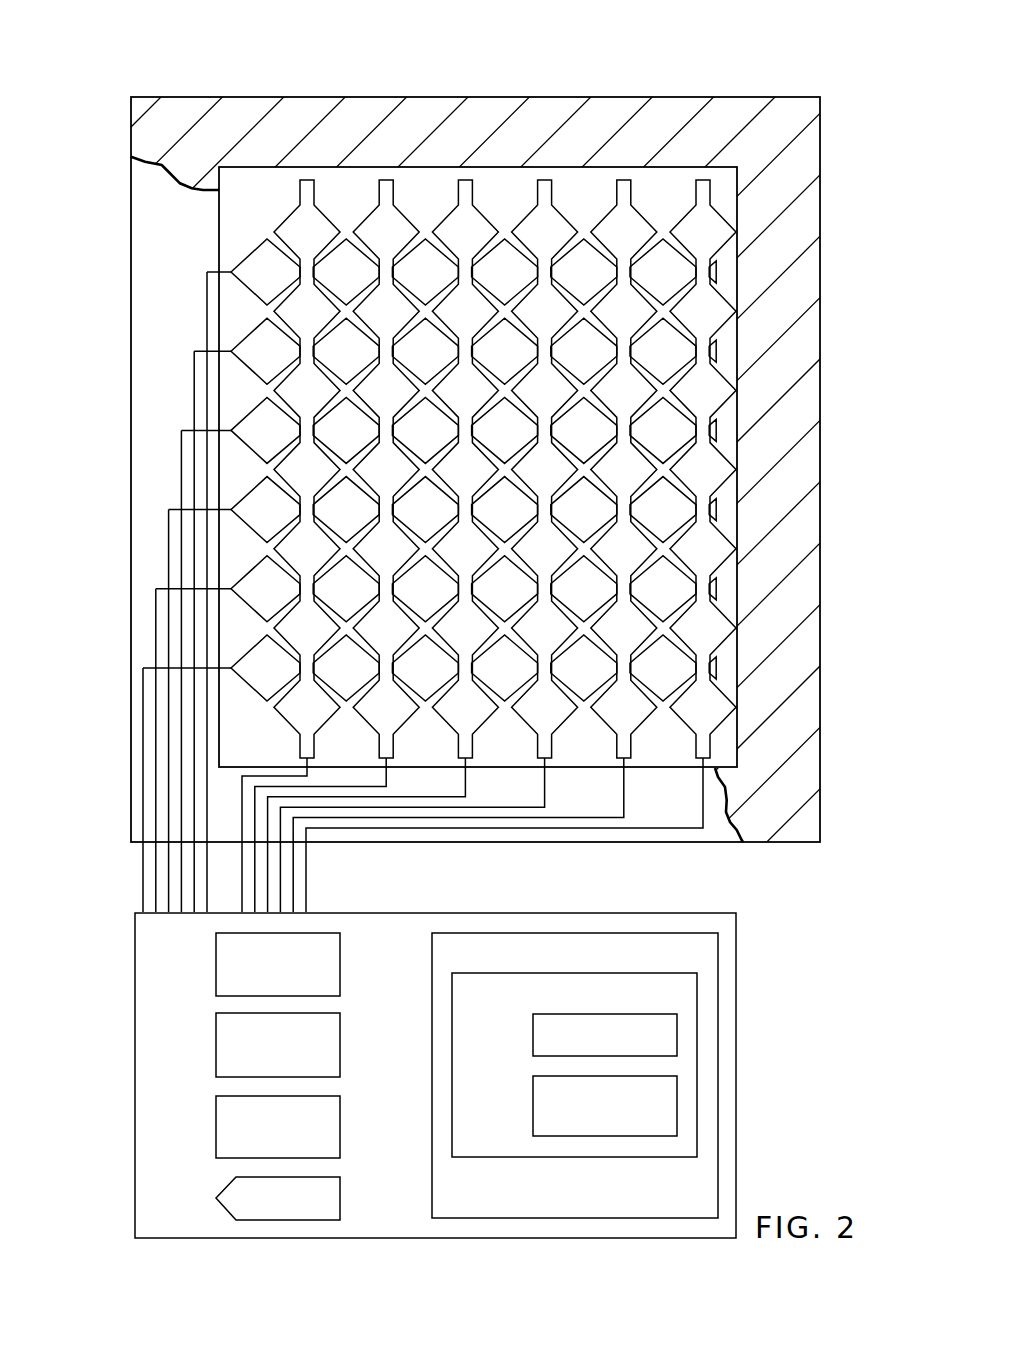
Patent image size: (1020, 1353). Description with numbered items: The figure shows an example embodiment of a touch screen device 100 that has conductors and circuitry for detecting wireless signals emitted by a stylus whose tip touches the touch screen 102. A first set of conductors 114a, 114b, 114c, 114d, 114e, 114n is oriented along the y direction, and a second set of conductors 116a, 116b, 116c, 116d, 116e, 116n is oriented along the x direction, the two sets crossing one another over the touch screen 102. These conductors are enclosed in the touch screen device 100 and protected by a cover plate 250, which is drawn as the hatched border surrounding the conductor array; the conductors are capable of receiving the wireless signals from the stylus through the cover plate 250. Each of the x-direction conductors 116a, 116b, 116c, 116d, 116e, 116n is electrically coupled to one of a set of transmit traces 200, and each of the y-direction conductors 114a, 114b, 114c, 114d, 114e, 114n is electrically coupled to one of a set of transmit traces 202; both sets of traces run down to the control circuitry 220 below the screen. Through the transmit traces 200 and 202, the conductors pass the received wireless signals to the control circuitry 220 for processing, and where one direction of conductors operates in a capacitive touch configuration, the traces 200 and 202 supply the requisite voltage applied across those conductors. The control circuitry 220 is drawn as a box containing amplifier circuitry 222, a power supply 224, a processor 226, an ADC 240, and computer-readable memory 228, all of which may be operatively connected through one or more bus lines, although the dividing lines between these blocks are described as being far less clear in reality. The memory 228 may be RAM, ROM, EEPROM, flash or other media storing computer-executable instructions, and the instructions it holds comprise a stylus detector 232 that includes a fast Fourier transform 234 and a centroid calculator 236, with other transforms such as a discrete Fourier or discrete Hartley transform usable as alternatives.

The touch screen device 100 is at (510, 467).
The touch screen 102 is at (469, 410).
The conductor 114a is at (287, 217).
The conductor 114b is at (366, 217).
The conductor 114c is at (445, 217).
The conductor 114d is at (525, 217).
The conductor 114e is at (604, 217).
The conductor 114n is at (683, 217).
The conductor 116a is at (252, 256).
The conductor 116b is at (252, 335).
The conductor 116c is at (252, 414).
The conductor 116d is at (252, 494).
The conductor 116e is at (252, 573).
The conductor 116n is at (252, 652).
The transmit traces 200 is at (143, 717).
The transmit traces 202 is at (580, 842).
The control circuitry 220 is at (397, 1075).
The amplifier circuitry 222 is at (216, 962).
The power supply 224 is at (216, 1045).
The processor 226 is at (216, 1127).
The computer-readable memory 228 is at (536, 1075).
The stylus detector 232 is at (574, 1092).
The fast Fourier transform 234 is at (533, 1035).
The centroid calculator 236 is at (533, 1105).
The ADC 240 is at (226, 1207).
The cover plate 250 is at (820, 158).